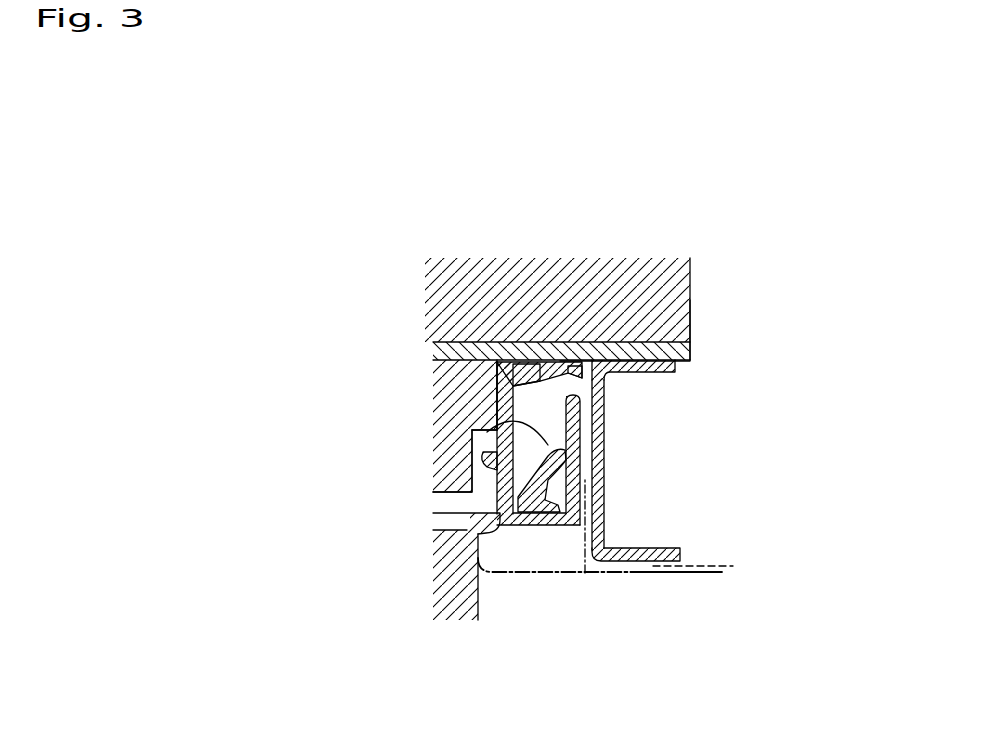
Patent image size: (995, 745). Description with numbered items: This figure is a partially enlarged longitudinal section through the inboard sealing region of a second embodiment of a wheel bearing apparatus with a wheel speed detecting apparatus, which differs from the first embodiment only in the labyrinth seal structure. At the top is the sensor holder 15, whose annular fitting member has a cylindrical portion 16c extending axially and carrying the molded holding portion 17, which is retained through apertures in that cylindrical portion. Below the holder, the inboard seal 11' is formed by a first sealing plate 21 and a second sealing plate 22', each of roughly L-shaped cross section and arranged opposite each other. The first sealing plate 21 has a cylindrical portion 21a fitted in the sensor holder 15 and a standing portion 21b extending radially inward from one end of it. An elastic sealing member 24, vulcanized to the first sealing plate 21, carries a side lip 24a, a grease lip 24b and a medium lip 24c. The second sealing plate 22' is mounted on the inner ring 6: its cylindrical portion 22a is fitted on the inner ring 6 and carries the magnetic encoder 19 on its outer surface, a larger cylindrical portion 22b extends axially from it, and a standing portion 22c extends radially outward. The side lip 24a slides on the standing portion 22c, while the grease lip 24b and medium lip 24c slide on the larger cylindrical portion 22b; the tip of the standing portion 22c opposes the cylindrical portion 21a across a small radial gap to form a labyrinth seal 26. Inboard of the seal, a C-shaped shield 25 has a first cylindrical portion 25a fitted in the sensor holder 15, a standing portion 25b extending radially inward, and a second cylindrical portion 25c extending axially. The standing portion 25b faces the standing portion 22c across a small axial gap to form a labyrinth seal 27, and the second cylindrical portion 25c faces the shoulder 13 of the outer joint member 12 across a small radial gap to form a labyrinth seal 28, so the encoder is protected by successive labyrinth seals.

The sensor holder 15 is at (648, 256).
The labyrinth seal 26 is at (640, 344).
The cylindrical portion 16c is at (588, 345).
The inboard seal 11' is at (756, 330).
The holding portion 17 is at (463, 402).
The sealing member 24 is at (344, 449).
The side lip 24a is at (476, 436).
The grease lip 24b is at (500, 500).
The medium lip 24c is at (488, 472).
The magnetic encoder 19 is at (470, 528).
The inner ring 6 is at (435, 602).
The second sealing plate 22' is at (534, 542).
The cylindrical portion 22a is at (481, 565).
The larger cylindrical portion 22b is at (525, 528).
The standing portion 22c is at (569, 528).
The first sealing plate 21 is at (513, 330).
The cylindrical portion 21a is at (540, 368).
The standing portion 21b is at (497, 363).
The shield 25 is at (707, 460).
The first cylindrical portion 25a is at (590, 383).
The standing portion 25b is at (608, 440).
The second cylindrical portion 25c is at (670, 540).
The labyrinth seal 28 is at (733, 564).
The shoulder 13 is at (603, 588).
The outer joint member 12 is at (752, 613).
The labyrinth seal 27 is at (585, 573).